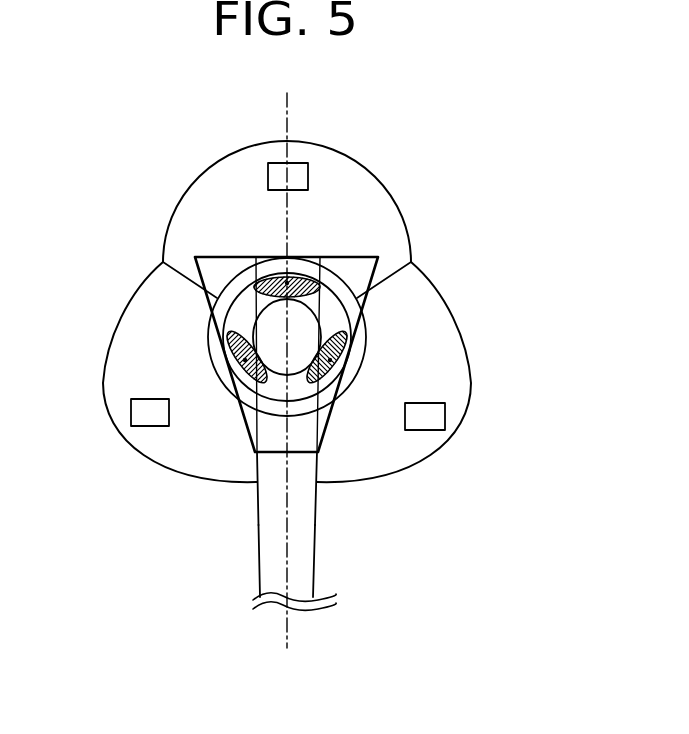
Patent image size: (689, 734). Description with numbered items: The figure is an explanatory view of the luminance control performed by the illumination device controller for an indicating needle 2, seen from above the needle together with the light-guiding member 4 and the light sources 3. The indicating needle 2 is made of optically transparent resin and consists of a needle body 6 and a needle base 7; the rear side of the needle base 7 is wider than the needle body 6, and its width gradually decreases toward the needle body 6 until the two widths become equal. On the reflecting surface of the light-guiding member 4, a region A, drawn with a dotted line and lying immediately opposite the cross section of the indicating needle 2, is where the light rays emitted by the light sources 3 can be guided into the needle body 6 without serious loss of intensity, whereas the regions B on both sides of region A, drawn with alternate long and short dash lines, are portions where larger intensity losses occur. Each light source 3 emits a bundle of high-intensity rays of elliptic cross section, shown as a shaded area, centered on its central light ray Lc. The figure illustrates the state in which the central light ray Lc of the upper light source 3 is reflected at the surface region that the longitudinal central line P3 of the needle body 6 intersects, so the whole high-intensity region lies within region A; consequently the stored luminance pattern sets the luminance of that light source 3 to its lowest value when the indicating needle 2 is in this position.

The indicating needle 2 is at (316, 523).
The light source 3 is at (308, 177).
The light-guiding member 4 is at (391, 207).
The needle body 6 is at (308, 570).
The needle base 7 is at (362, 300).
The region A is at (292, 280).
The region B is at (238, 340).
The central light ray Lc is at (287, 283).
The longitudinal central line P3 is at (288, 633).